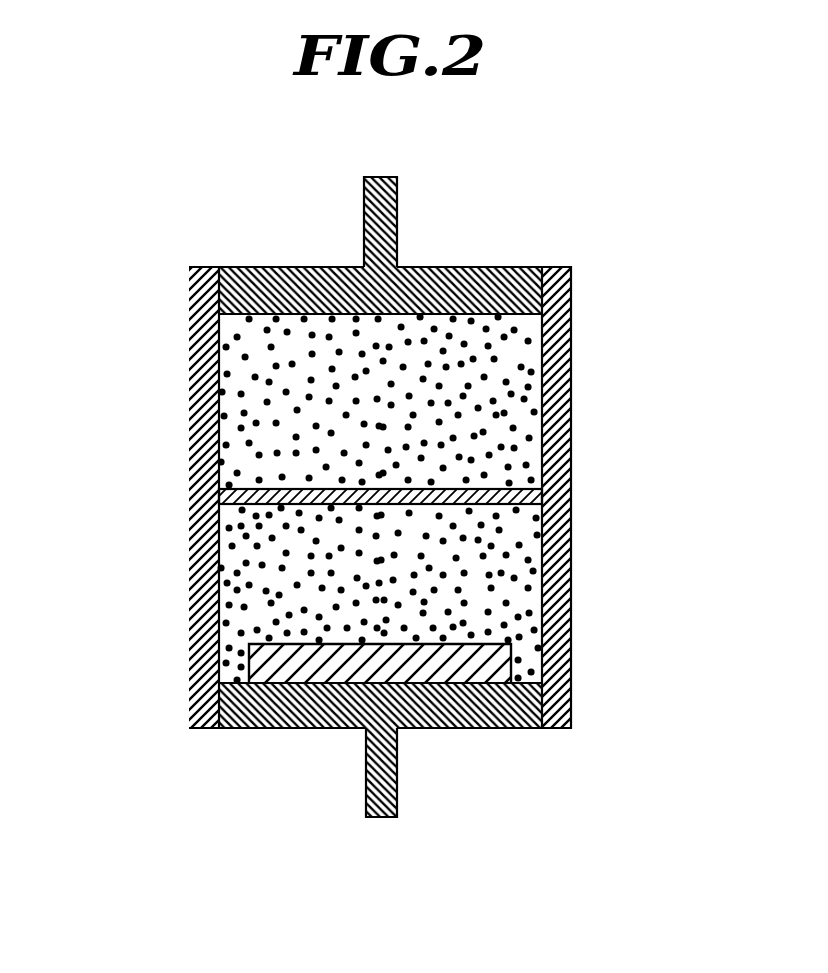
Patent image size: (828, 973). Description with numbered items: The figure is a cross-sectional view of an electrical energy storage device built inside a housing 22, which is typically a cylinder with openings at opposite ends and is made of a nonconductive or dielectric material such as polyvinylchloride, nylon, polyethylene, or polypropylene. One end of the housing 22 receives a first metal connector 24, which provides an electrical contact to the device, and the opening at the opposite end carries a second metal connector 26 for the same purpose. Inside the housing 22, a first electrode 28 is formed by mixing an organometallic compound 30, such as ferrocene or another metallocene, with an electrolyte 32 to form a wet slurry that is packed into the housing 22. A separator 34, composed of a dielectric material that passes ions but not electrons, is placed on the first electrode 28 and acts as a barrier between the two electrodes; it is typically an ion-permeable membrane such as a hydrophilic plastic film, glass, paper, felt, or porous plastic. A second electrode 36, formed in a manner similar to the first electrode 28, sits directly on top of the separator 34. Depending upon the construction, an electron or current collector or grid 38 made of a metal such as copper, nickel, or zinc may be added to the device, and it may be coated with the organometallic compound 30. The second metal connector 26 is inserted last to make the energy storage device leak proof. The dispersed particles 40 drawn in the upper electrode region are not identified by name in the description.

The housing wall 22 is at (200, 370).
The bottom terminal plate 24 is at (364, 713).
The top terminal plate 26 is at (453, 270).
The lower electrode material 28 is at (265, 607).
The particles in lower region 30 is at (490, 576).
The lower electrolyte region 32 is at (513, 533).
The separator plate 34 is at (235, 505).
The upper electrolyte region 36 is at (512, 357).
The bottom electrode plate 38 is at (468, 655).
The particles in upper region 40 is at (249, 443).